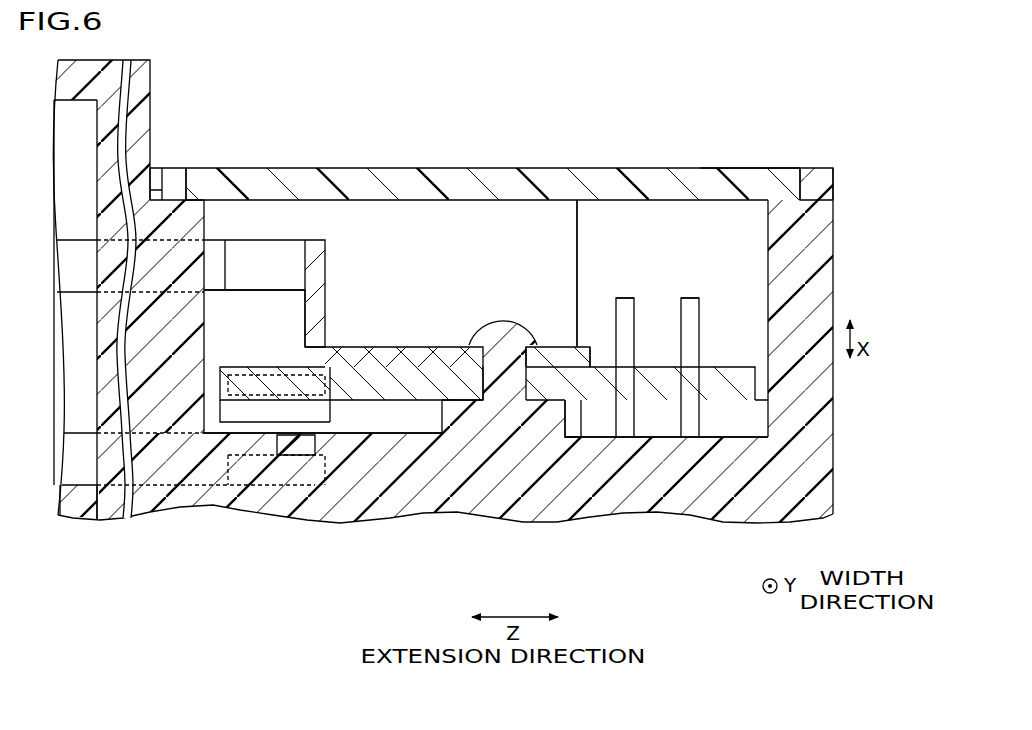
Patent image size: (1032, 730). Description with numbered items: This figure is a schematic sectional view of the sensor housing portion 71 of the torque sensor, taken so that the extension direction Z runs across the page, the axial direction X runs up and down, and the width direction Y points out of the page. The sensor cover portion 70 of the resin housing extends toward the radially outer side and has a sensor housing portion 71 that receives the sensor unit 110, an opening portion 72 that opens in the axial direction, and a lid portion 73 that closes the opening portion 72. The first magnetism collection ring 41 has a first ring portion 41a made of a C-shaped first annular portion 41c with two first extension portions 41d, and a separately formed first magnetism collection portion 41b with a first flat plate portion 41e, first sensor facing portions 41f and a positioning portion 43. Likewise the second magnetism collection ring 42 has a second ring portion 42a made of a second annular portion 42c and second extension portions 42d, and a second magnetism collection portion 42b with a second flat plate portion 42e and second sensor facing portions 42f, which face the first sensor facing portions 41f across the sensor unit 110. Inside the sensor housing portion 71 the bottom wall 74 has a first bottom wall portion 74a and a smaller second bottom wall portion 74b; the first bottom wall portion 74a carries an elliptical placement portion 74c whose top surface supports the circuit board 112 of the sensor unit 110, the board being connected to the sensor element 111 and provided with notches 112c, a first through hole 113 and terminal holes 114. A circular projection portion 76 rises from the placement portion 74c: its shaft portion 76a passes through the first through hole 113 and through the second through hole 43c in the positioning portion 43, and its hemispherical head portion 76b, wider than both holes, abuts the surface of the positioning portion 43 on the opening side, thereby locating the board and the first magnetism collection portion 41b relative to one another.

The first magnetism collection ring 41 is at (177, 93).
The first ring portion 41a is at (155, 133).
The first magnetism collection portion 41b is at (316, 230).
The first annular portion 41c is at (162, 190).
The first extension portions 41d is at (211, 240).
The first flat plate portion 41e is at (327, 252).
The first sensor facing portions 41f is at (261, 366).
The second magnetism collection ring 42 is at (90, 599).
The second ring portion 42a is at (182, 560).
The second magnetism collection portion 42b is at (337, 560).
The second annular portion 42c is at (80, 487).
The second extension portions 42d is at (149, 487).
The second flat plate portion 42e is at (297, 450).
The second sensor facing portions 42f is at (238, 487).
The positioning portion 43 is at (364, 347).
The second through hole 43c is at (472, 343).
The sensor cover portion 70 is at (685, 125).
The sensor housing portion 71 is at (694, 224).
The opening portion 72 is at (797, 190).
The lid portion 73 is at (740, 170).
The bottom wall 74 is at (583, 269).
The first bottom wall portion 74a is at (655, 435).
The second bottom wall portion 74b is at (688, 435).
The placement portion 74c is at (578, 435).
The projection portion 76 is at (570, 278).
The shaft portion 76a is at (548, 346).
The head portion 76b is at (518, 343).
The sensor unit 110 is at (207, 370).
The sensor element 111 is at (372, 472).
The circuit board 112 is at (472, 427).
The notches 112c is at (333, 406).
The first through hole 113 is at (495, 387).
The terminal holes 114 is at (700, 408).